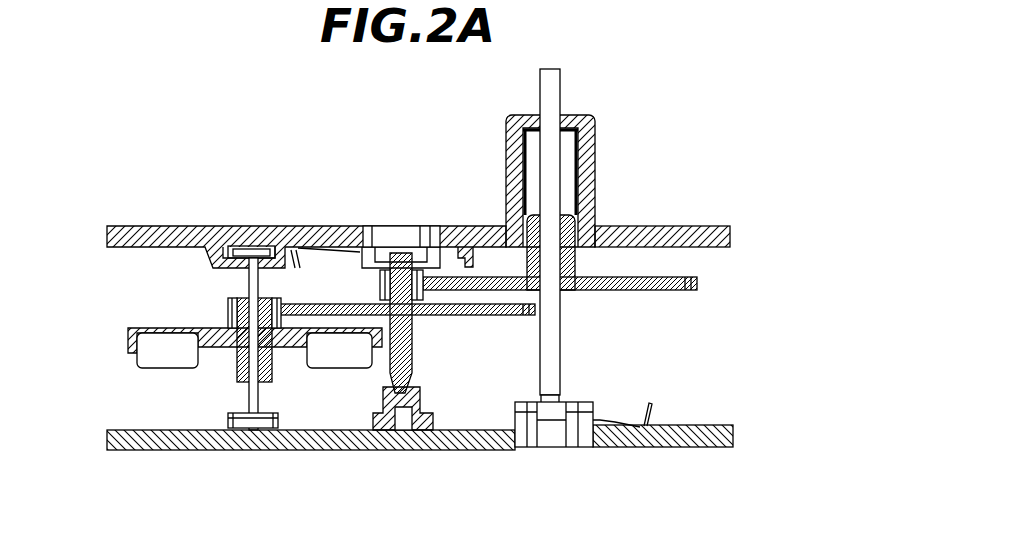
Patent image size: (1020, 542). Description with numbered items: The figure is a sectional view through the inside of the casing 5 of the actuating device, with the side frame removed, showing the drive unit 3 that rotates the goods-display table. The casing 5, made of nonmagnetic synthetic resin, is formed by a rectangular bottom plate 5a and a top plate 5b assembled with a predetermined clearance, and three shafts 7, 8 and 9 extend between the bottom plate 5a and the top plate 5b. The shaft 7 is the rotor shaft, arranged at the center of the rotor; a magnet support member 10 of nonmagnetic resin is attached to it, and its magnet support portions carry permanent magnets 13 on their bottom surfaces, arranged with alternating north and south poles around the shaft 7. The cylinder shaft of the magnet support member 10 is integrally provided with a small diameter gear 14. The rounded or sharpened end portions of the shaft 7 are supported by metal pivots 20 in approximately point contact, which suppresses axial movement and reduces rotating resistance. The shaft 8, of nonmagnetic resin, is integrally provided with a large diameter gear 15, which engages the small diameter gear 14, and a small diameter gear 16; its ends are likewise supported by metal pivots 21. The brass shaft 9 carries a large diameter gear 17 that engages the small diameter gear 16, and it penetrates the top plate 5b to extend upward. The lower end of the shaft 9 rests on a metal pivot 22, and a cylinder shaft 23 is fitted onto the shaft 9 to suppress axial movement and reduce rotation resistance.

The drive unit 3 is at (754, 297).
The casing 5 is at (692, 224).
The bottom plate 5a is at (712, 440).
The top plate 5b is at (124, 229).
The shaft 7 is at (248, 399).
The shaft 8 is at (413, 352).
The shaft 9 is at (556, 317).
The magnet support member 10 is at (204, 327).
The permanent magnet 13 is at (150, 358).
The small diameter gear 14 is at (232, 303).
The large diameter gear 15 is at (516, 316).
The small diameter gear 16 is at (380, 288).
The large diameter gear 17 is at (672, 292).
The metal pivot 20 is at (243, 246).
The metal pivot 21 is at (390, 243).
The metal pivot 22 is at (560, 423).
The cylinder shaft 23 is at (581, 139).